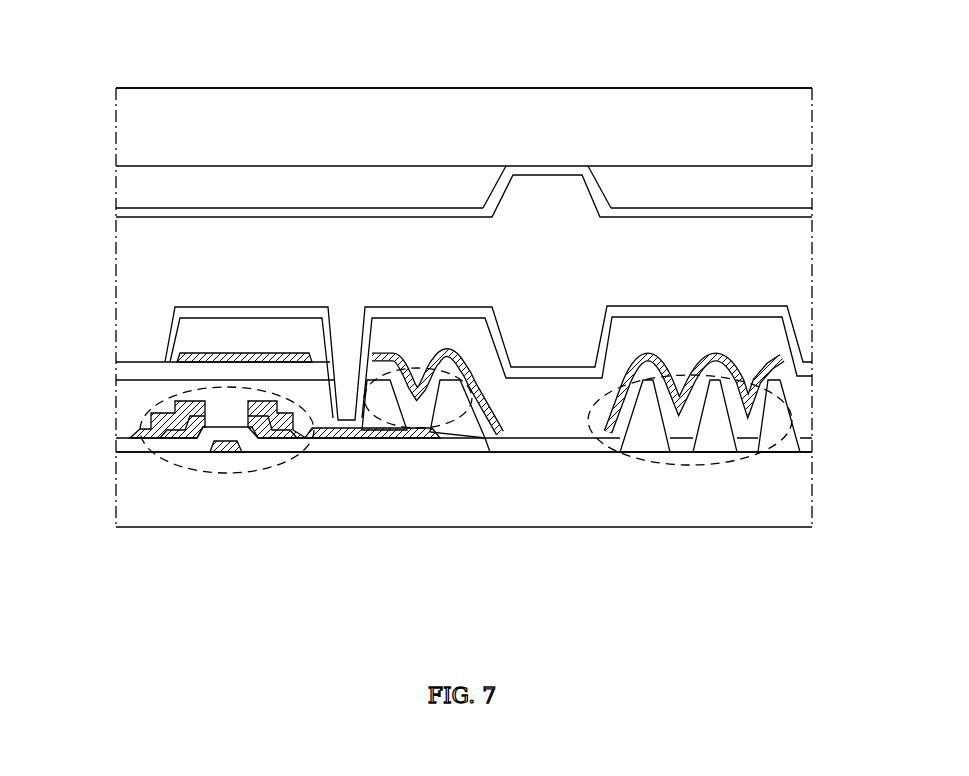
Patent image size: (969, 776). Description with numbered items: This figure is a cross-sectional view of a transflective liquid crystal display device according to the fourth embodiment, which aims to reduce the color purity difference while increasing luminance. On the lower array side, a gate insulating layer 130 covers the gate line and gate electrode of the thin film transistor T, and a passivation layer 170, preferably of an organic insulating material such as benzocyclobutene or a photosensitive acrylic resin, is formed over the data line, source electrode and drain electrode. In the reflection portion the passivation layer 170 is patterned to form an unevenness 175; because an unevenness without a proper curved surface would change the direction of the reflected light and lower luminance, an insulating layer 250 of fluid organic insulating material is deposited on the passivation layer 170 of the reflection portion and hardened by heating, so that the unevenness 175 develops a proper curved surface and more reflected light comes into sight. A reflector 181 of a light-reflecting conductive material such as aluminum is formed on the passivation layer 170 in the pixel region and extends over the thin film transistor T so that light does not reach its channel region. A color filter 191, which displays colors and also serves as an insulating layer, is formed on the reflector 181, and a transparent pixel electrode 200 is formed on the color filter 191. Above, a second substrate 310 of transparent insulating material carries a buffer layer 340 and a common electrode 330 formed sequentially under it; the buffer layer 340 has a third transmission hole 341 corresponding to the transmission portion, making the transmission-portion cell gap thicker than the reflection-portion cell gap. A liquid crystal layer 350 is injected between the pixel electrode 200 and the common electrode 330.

The second substrate 310 is at (449, 103).
The buffer layer 340 is at (243, 178).
The third transmission hole 341 is at (552, 203).
The common electrode 330 is at (355, 213).
The liquid crystal layer 350 is at (796, 262).
The insulating layer 250 is at (128, 370).
The pixel electrode 200 is at (405, 303).
The color filter 191 is at (265, 347).
The reflector 181 is at (218, 350).
The unevenness 175 is at (455, 430).
The passivation layer 170 is at (128, 403).
The gate insulating layer 130 is at (815, 440).
The thin film transistor T is at (222, 478).